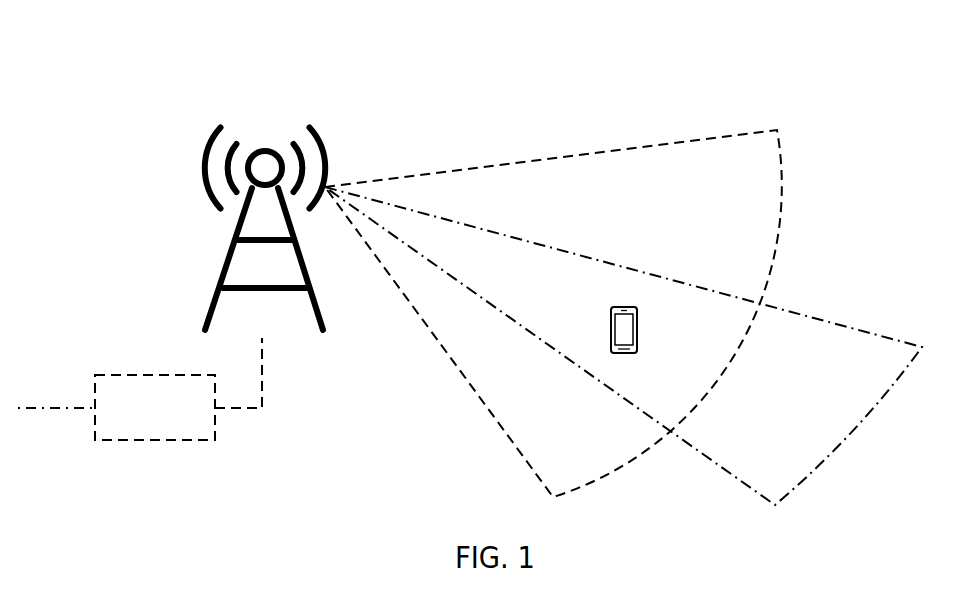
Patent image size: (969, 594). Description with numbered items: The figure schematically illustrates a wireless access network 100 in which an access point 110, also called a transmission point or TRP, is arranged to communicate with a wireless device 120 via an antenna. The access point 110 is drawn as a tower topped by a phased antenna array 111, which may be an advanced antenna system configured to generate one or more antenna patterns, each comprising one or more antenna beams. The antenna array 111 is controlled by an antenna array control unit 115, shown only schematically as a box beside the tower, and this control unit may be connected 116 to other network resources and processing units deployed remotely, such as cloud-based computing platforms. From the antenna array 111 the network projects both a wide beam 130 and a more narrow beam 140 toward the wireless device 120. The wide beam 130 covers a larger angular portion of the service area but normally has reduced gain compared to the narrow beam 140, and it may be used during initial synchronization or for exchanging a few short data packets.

The wireless access network 100 is at (113, 68).
The access point 110 is at (225, 262).
The phased antenna array 111 is at (272, 138).
The antenna array control unit 115 is at (178, 389).
The connection 116 is at (55, 388).
The wireless device 120 is at (641, 333).
The wide beam 130 is at (712, 210).
The narrow beam 140 is at (822, 390).